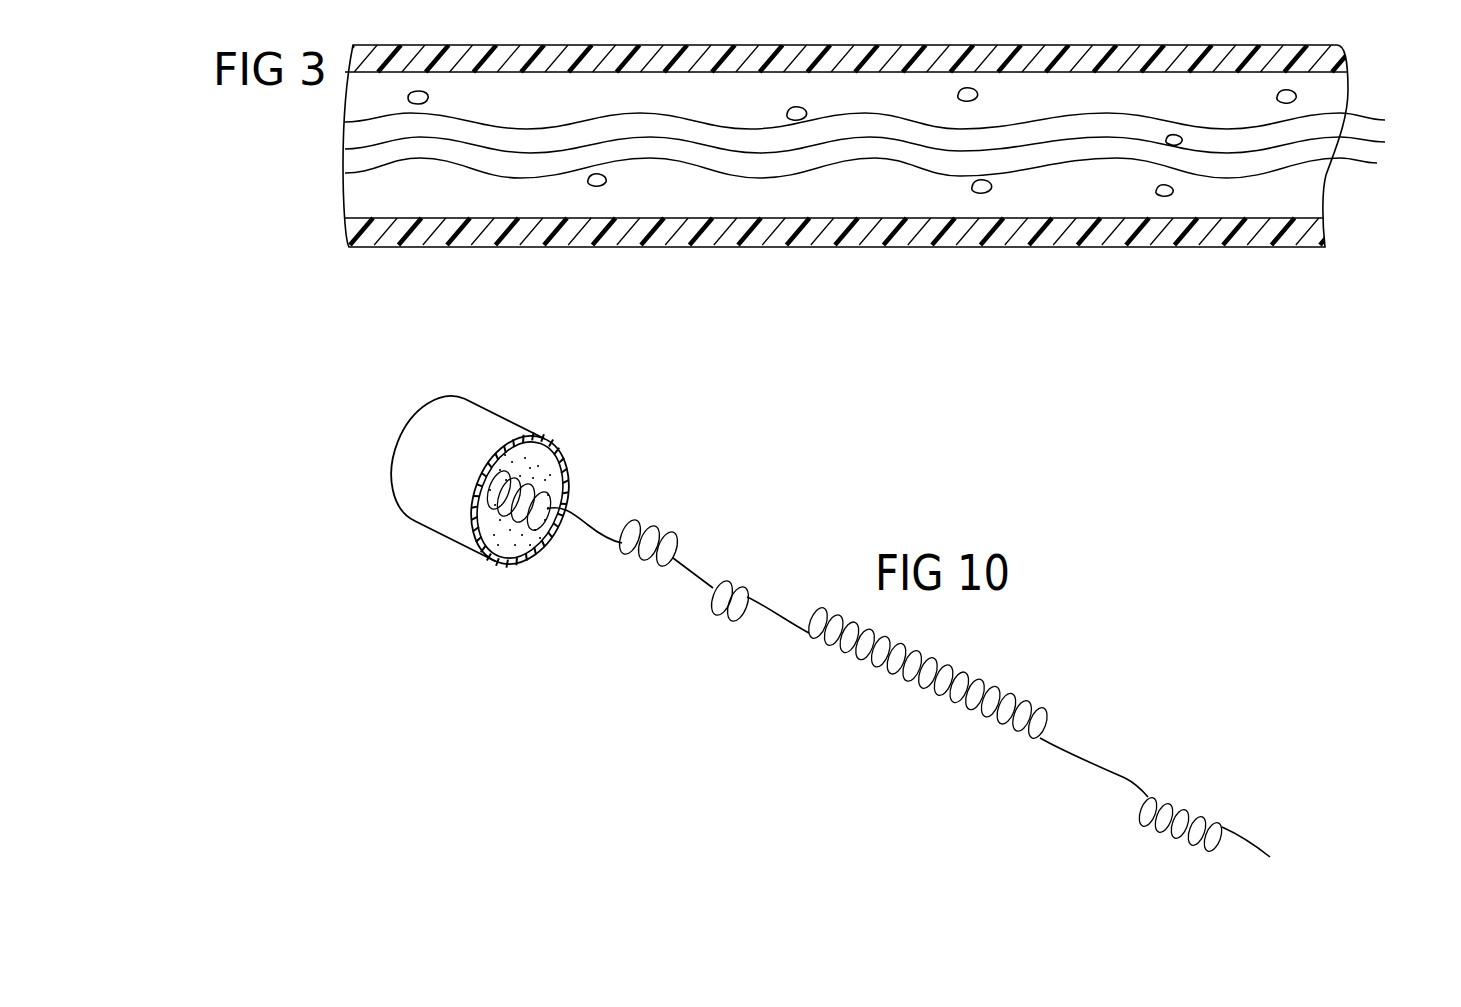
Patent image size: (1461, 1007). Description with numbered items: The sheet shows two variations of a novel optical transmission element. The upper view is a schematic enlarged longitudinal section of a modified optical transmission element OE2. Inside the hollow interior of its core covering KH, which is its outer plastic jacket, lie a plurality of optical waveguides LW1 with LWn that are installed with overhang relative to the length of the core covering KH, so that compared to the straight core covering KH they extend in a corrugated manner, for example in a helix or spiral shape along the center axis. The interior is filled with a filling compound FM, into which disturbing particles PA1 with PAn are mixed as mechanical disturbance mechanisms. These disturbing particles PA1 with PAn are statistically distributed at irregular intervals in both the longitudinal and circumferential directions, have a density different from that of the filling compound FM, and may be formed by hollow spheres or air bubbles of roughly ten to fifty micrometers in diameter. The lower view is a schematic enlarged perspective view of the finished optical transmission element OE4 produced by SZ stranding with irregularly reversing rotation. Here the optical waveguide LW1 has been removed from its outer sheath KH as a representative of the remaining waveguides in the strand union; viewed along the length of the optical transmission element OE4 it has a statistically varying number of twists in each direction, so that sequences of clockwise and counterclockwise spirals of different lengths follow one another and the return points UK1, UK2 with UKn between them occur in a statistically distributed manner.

In FIG. 3, the optical transmission element OE2 is at (1338, 266).
In FIG. 3, the core covering KH is at (1253, 232).
In FIG. 10, the core covering KH is at (565, 450).
In FIG. 3, the optical waveguide LW1 is at (1372, 118).
In FIG. 10, the optical waveguide LW1 is at (782, 637).
In FIG. 3, the optical waveguide LWn is at (1358, 163).
In FIG. 3, the filling compound FM is at (355, 191).
In FIG. 10, the filling compound FM is at (517, 542).
In FIG. 3, the disturbing particle PA1 is at (789, 122).
In FIG. 3, the disturbing particle PAn is at (1157, 193).
In FIG. 10, the optical transmission element OE4 is at (440, 547).
In FIG. 10, the return point UK1 is at (587, 513).
In FIG. 10, the return point UK2 is at (697, 570).
In FIG. 10, the return point UKn is at (1103, 768).